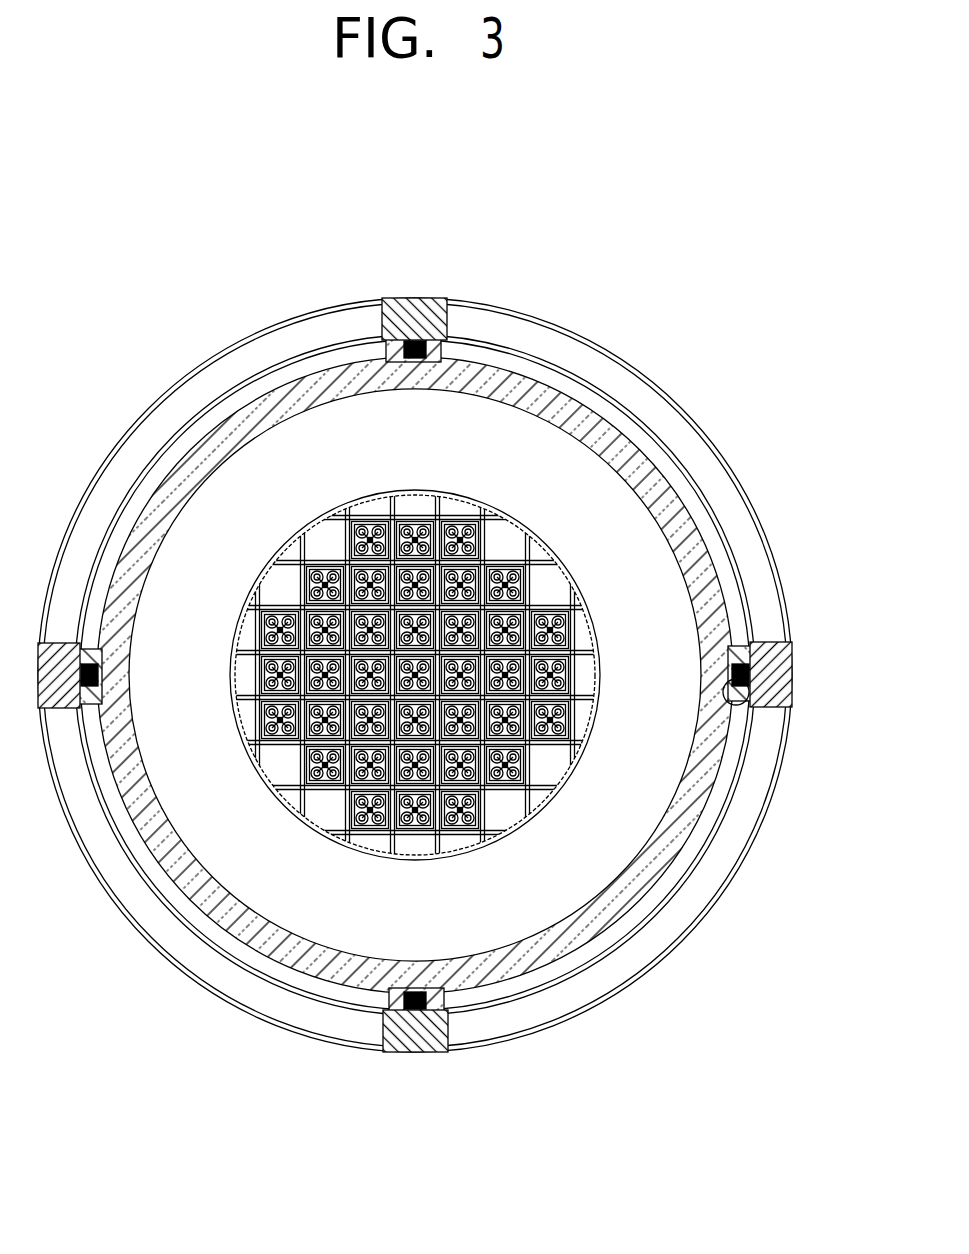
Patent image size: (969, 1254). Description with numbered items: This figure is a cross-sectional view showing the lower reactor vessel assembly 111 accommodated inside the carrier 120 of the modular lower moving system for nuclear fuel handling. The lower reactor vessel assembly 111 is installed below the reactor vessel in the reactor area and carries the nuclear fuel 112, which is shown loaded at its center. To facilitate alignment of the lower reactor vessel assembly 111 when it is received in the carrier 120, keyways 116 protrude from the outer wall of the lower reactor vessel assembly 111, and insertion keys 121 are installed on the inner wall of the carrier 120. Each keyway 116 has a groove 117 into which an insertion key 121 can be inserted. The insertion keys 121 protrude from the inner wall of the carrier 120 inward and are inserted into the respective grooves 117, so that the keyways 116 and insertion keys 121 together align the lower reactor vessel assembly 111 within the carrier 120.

The lower reactor vessel assembly 111 is at (682, 828).
The nuclear fuel 112 is at (557, 627).
The keyway 116 is at (755, 634).
The groove 117 is at (745, 704).
The carrier 120 is at (641, 372).
The insertion key 121 is at (752, 677).